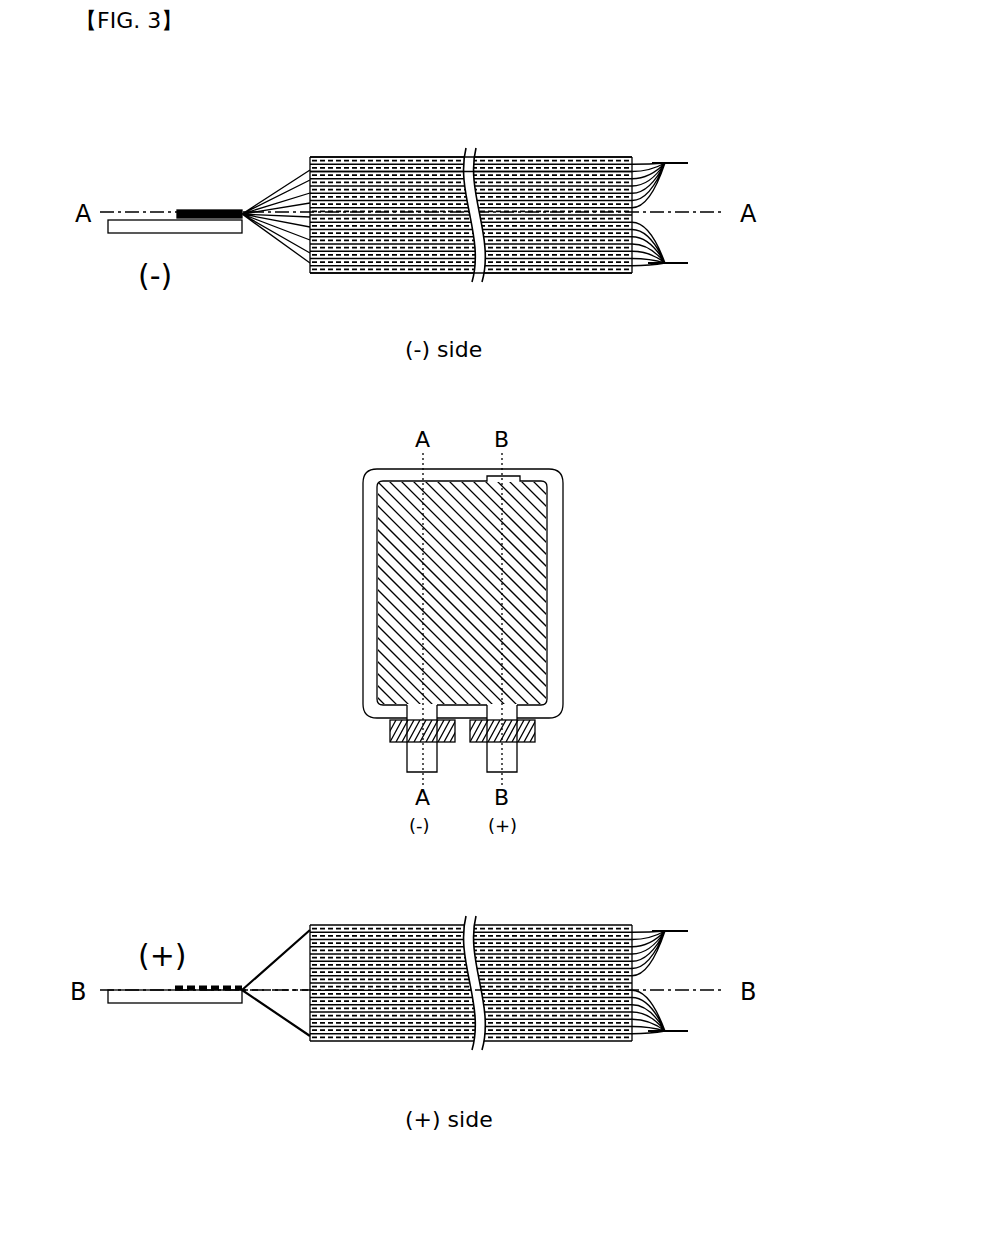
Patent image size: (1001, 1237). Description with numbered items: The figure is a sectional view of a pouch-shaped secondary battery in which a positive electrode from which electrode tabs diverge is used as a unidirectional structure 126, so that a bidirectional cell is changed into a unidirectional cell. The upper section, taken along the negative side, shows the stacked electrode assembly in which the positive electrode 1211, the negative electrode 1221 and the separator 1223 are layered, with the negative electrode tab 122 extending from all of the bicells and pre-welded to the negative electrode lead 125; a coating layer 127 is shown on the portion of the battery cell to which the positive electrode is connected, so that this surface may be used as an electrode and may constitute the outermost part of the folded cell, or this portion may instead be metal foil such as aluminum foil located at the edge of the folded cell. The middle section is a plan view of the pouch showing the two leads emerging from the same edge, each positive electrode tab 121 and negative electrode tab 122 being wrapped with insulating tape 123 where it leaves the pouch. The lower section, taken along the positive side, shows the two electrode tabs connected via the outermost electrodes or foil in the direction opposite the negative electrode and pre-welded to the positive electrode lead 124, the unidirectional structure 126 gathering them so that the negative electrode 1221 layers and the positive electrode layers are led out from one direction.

The positive electrode tab 121 is at (500, 760).
The negative electrode tab 122 is at (212, 208).
The insulating tape 123 is at (443, 728).
The positive electrode lead 124 is at (531, 478).
The negative electrode lead 125 is at (133, 219).
The unidirectional structure 126 is at (657, 165).
The coating layer 127 is at (578, 270).
The positive electrode 1211 is at (481, 185).
The negative electrode 1221 is at (318, 179).
The separator 1223 is at (575, 179).